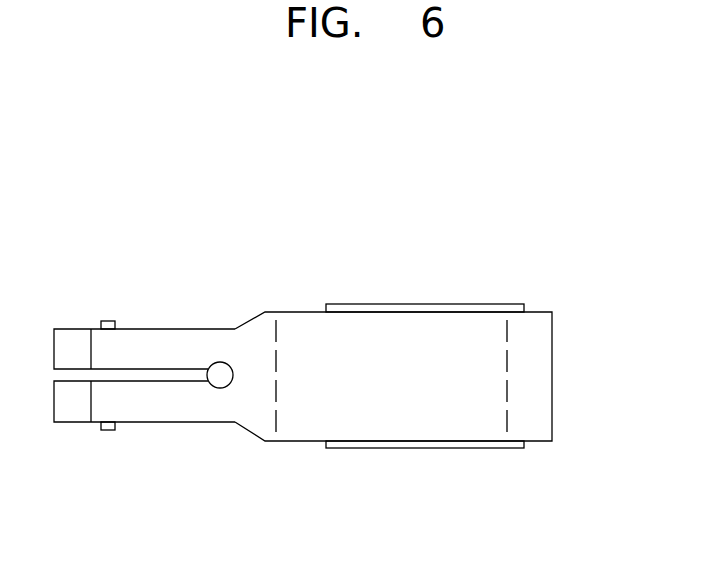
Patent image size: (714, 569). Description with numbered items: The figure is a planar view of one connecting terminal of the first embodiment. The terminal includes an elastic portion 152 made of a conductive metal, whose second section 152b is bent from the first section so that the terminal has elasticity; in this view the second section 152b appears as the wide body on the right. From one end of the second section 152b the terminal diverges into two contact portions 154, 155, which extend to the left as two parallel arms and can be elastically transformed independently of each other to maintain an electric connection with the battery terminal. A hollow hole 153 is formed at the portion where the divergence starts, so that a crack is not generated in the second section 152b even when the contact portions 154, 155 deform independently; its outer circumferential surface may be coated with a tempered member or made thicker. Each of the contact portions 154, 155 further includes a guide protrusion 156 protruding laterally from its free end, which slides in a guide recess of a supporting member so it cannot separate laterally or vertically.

The elastic portion 152 is at (388, 236).
The second section 152b is at (412, 308).
The hollow hole 153 is at (230, 366).
The contact portion 154 is at (168, 413).
The contact portion 155 is at (169, 338).
The guide protrusion 156 is at (108, 321).